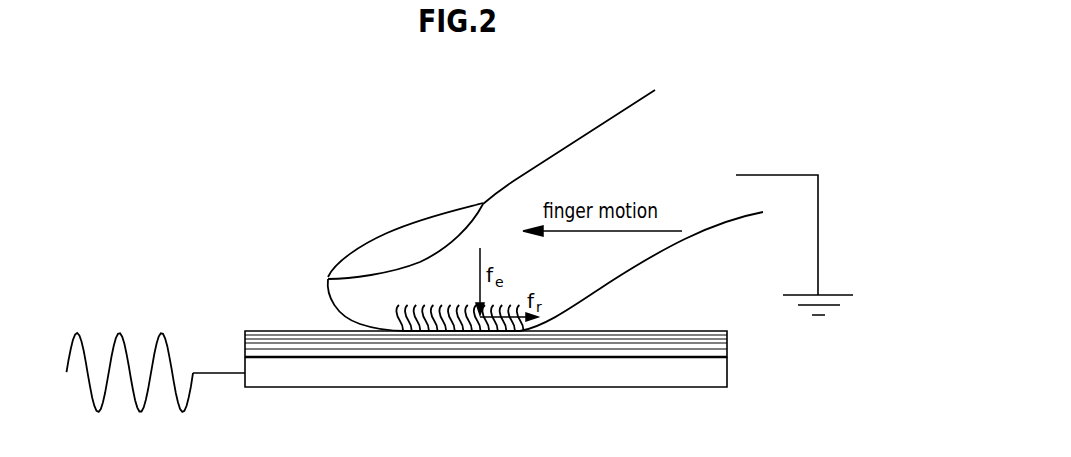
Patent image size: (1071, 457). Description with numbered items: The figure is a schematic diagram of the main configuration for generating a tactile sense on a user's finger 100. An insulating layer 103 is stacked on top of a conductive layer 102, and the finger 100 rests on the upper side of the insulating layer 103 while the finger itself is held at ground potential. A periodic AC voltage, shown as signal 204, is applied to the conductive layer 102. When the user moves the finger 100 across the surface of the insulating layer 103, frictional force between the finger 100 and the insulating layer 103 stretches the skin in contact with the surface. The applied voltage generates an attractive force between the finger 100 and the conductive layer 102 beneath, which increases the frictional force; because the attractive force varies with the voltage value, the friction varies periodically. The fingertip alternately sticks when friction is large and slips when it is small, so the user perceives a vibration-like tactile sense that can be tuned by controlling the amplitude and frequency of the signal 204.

The finger 100 is at (584, 135).
The conductive layer 102 is at (727, 370).
The insulating layer 103 is at (268, 330).
The signal 204 is at (125, 333).